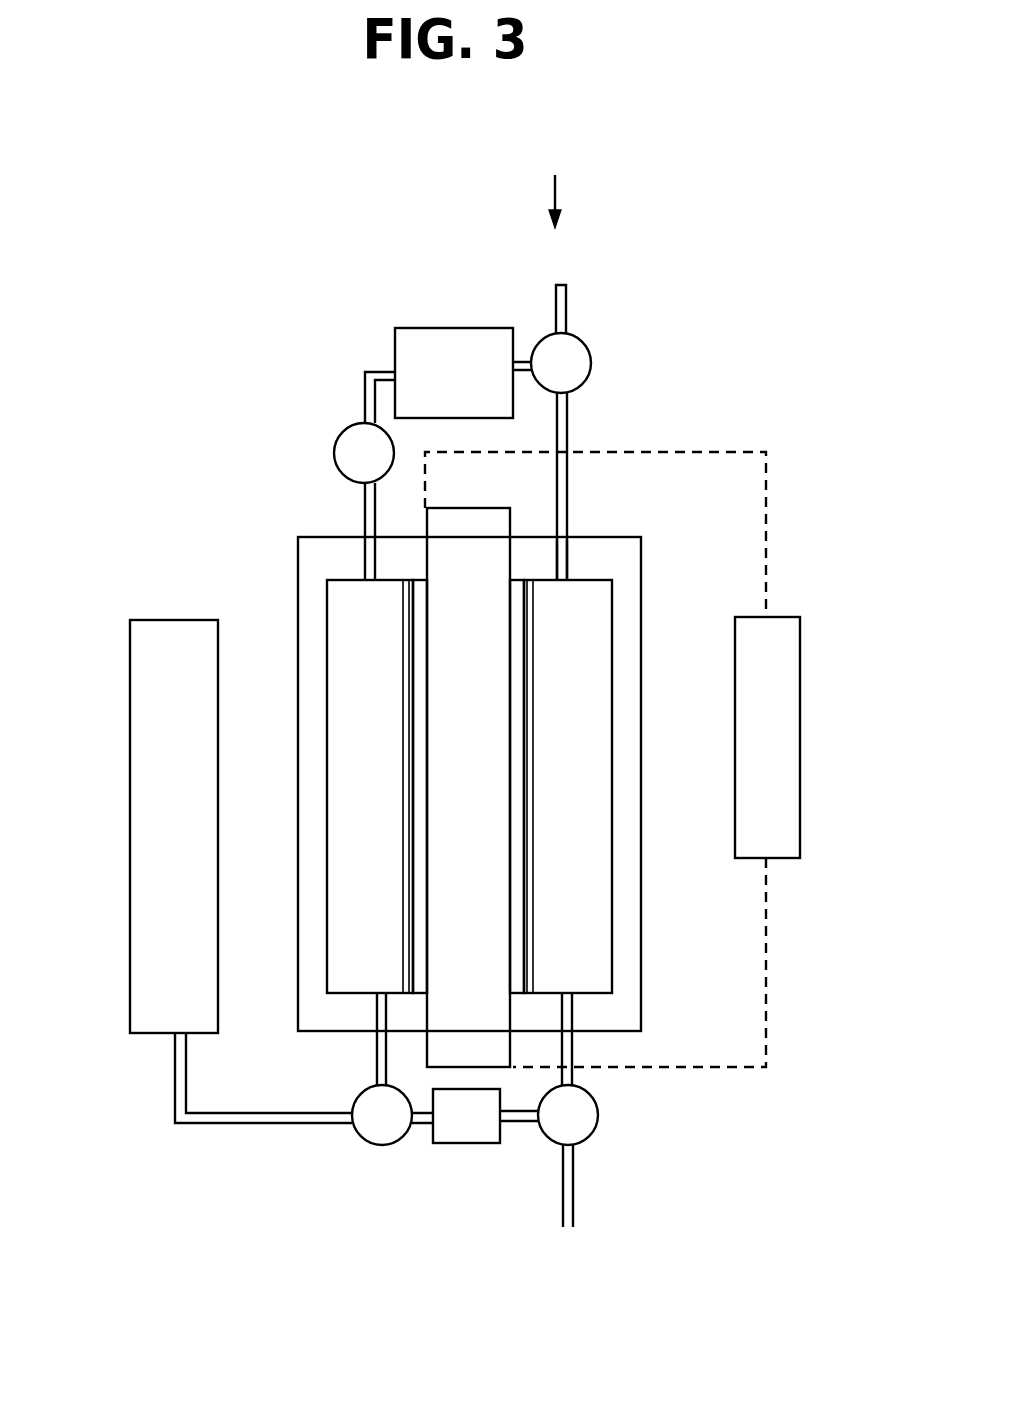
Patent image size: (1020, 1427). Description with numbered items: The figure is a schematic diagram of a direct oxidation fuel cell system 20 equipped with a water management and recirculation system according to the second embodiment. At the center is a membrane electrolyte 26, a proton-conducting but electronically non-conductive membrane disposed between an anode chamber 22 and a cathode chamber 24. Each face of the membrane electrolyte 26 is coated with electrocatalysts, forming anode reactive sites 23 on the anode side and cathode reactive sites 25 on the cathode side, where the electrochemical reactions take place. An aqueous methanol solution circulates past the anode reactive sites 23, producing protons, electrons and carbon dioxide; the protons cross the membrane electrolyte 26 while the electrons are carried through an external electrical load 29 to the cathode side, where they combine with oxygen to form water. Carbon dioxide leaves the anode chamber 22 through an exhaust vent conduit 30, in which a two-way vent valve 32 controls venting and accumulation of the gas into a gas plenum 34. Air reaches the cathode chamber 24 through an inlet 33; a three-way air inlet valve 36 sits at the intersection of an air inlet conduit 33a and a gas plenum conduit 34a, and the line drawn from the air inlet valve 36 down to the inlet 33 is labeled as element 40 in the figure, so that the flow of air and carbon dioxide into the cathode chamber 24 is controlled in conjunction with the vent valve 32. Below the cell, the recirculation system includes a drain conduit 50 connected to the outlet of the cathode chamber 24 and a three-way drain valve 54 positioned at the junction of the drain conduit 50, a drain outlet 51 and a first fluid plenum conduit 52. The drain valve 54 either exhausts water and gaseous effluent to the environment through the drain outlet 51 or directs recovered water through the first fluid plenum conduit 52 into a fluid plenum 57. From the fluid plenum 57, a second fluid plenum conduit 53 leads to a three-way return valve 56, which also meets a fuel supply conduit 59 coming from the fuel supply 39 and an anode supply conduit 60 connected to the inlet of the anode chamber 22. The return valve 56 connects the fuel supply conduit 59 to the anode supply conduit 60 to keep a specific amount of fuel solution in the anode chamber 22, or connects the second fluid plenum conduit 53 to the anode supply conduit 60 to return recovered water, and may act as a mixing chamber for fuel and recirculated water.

The direct oxidation fuel cell system 20 is at (146, 378).
The anode chamber 22 is at (355, 620).
The anode reactive sites 23 is at (415, 885).
The cathode chamber 24 is at (590, 615).
The cathode reactive sites 25 is at (518, 850).
The membrane electrolyte 26 is at (490, 717).
The external electrical load 29 is at (783, 770).
The exhaust vent conduit 30 is at (365, 395).
The vent valve 32 is at (347, 452).
The inlet 33 is at (567, 578).
The air inlet conduit 33a is at (566, 305).
The gas plenum 34 is at (458, 350).
The gas plenum conduit 34a is at (527, 355).
The air inlet valve 36 is at (595, 352).
The fuel supply 39 is at (145, 893).
The air conduit 40 is at (567, 415).
The drain conduit 50 is at (575, 1057).
The drain outlet 51 is at (578, 1220).
The first fluid plenum conduit 52 is at (517, 1122).
The second fluid plenum conduit 53 is at (420, 1124).
The drain valve 54 is at (597, 1130).
The return valve 56 is at (372, 1133).
The fluid plenum 57 is at (442, 1144).
The fuel supply conduit 59 is at (222, 1125).
The anode supply conduit 60 is at (377, 1053).